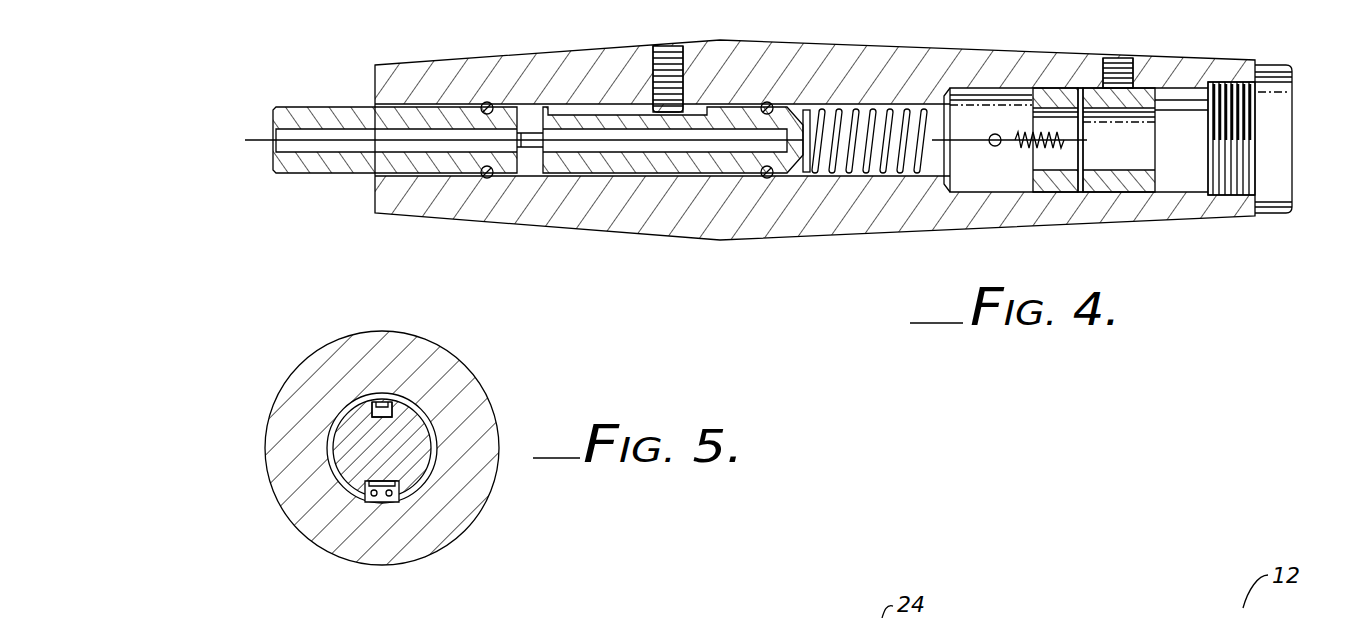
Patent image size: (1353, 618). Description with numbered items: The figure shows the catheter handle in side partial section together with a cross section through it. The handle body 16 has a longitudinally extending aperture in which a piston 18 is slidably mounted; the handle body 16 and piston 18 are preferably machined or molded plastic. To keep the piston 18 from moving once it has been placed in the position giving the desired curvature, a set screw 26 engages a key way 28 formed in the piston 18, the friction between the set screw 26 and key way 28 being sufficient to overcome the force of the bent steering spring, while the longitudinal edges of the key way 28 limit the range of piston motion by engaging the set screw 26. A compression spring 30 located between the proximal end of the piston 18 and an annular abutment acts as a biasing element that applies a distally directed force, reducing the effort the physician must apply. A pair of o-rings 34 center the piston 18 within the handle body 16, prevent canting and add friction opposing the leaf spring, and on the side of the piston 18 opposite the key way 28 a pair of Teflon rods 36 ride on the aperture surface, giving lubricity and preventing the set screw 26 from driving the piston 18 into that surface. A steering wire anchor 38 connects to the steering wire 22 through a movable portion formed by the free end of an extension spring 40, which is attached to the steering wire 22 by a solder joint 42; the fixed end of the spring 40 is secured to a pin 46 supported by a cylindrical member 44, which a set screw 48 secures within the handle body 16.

In FIG. 4, the handle body 16 is at (422, 212).
In FIG. 5, the handle body 16 is at (480, 375).
In FIG. 4, the piston 18 is at (322, 107).
In FIG. 5, the piston 18 is at (345, 452).
In FIG. 4, the steering wire 22 is at (966, 122).
In FIG. 4, the set screw 26 is at (660, 48).
In FIG. 4, the key way 28 is at (590, 113).
In FIG. 5, the key way 28 is at (393, 400).
In FIG. 4, the compression spring 30 is at (833, 172).
In FIG. 4, the o-rings 34 is at (487, 102).
In FIG. 5, the Teflon rods 36 is at (367, 500).
In FIG. 4, the steering wire anchor 38 is at (1177, 115).
In FIG. 4, the extension spring 40 is at (1050, 150).
In FIG. 4, the solder joint 42 is at (998, 148).
In FIG. 4, the cylindrical member 44 is at (1168, 171).
In FIG. 4, the pin 46 is at (1080, 90).
In FIG. 4, the set screw 48 is at (1121, 58).